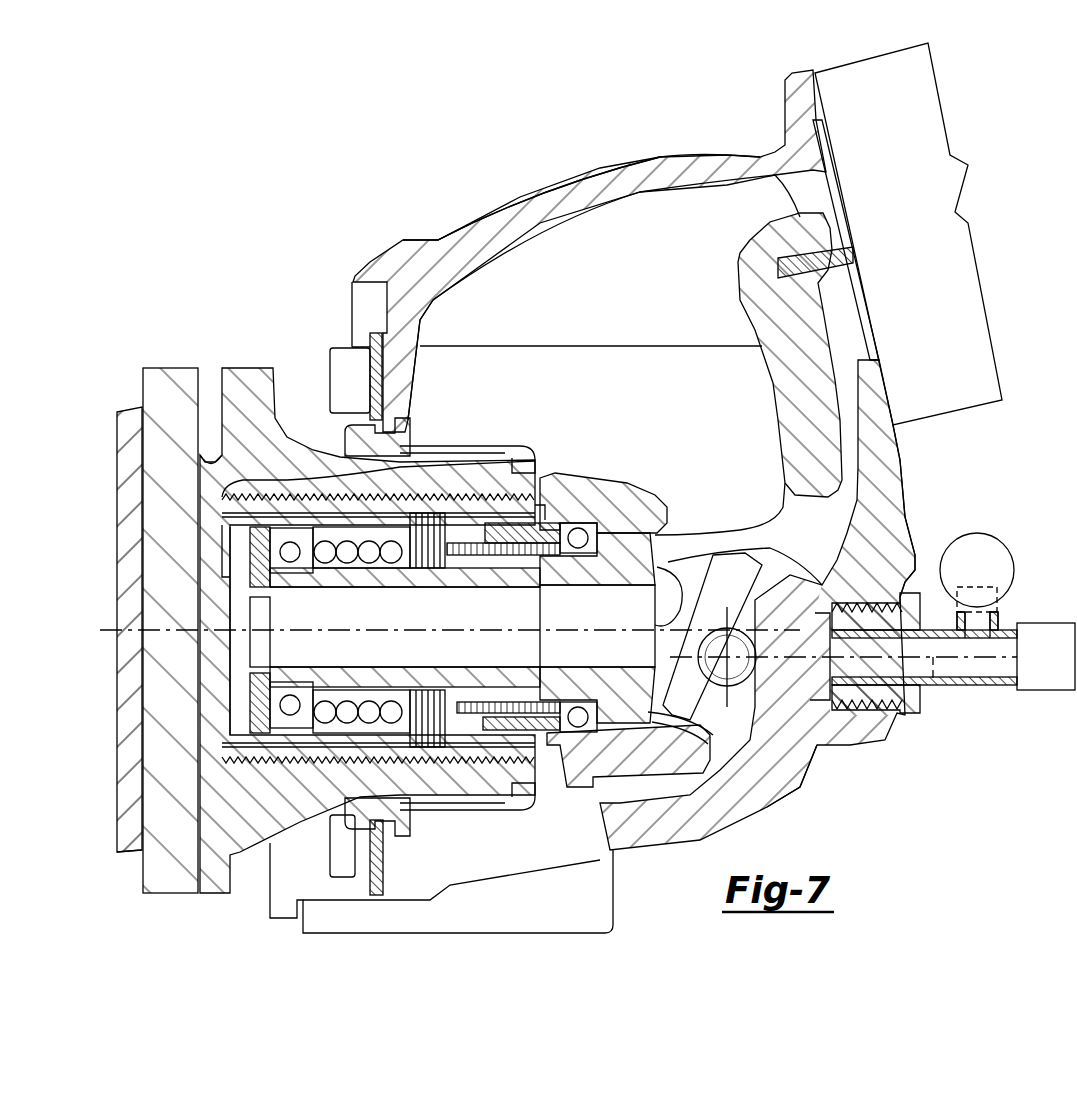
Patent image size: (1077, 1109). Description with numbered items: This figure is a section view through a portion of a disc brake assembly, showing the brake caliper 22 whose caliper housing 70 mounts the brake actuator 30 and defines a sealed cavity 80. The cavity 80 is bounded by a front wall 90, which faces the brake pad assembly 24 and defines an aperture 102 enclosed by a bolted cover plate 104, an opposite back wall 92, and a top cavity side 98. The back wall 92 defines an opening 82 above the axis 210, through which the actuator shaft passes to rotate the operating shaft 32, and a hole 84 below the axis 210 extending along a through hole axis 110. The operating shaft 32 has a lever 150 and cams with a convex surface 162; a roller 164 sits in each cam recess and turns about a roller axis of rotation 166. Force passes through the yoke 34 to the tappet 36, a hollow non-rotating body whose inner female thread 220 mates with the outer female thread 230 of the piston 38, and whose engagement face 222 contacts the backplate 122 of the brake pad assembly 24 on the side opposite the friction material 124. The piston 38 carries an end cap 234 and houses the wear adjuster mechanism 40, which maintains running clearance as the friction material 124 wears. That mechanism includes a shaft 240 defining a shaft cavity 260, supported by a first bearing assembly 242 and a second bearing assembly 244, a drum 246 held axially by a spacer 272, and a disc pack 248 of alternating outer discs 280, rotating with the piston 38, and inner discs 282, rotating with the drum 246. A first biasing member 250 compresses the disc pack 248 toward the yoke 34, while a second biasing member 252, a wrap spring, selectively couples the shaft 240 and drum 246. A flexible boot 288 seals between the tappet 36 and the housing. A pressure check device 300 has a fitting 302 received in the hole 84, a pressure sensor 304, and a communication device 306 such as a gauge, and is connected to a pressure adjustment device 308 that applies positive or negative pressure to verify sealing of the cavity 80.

The brake caliper 22 is at (593, 166).
The caliper housing 70 is at (604, 237).
The brake pad assembly 24 is at (122, 410).
The brake actuator 30 is at (928, 226).
The operating shaft 32 is at (803, 543).
The yoke 34 is at (640, 483).
The tappet 36 is at (252, 366).
The piston 38 is at (222, 508).
The wear adjuster mechanism 40 is at (552, 504).
The cavity 80 is at (628, 312).
The opening 82 is at (862, 333).
The hole 84 is at (862, 705).
The front wall 90 is at (410, 376).
The back wall 92 is at (880, 468).
The top cavity side 98 is at (495, 250).
The aperture 102 is at (410, 418).
The cover plate 104 is at (370, 372).
The through hole axis 110 is at (933, 680).
The backplate 122 is at (168, 366).
The friction material 124 is at (137, 850).
The lever 150 is at (740, 292).
The convex surface 162 is at (690, 540).
The roller 164 is at (733, 690).
The roller axis of rotation 166 is at (755, 665).
The axis 210 is at (430, 622).
The inner female thread 220 is at (462, 497).
The engagement face 222 is at (200, 468).
The outer female thread 230 is at (327, 497).
The end cap 234 is at (265, 578).
The shaft 240 is at (608, 588).
The first bearing assembly 242 is at (267, 705).
The second bearing assembly 244 is at (580, 703).
The drum 246 is at (483, 690).
The disc pack 248 is at (423, 765).
The first biasing member 250 is at (330, 745).
The second biasing member 252 is at (543, 713).
The shaft cavity 260 is at (282, 657).
The spacer 272 is at (397, 690).
The outer disc 280 is at (415, 747).
The inner disc 282 is at (440, 720).
The flexible boot 288 is at (517, 445).
The pressure check device 300 is at (972, 695).
The fitting 302 is at (912, 720).
The pressure sensor 304 is at (998, 603).
The communication device 306 is at (1000, 572).
The pressure adjustment device 308 is at (1073, 671).